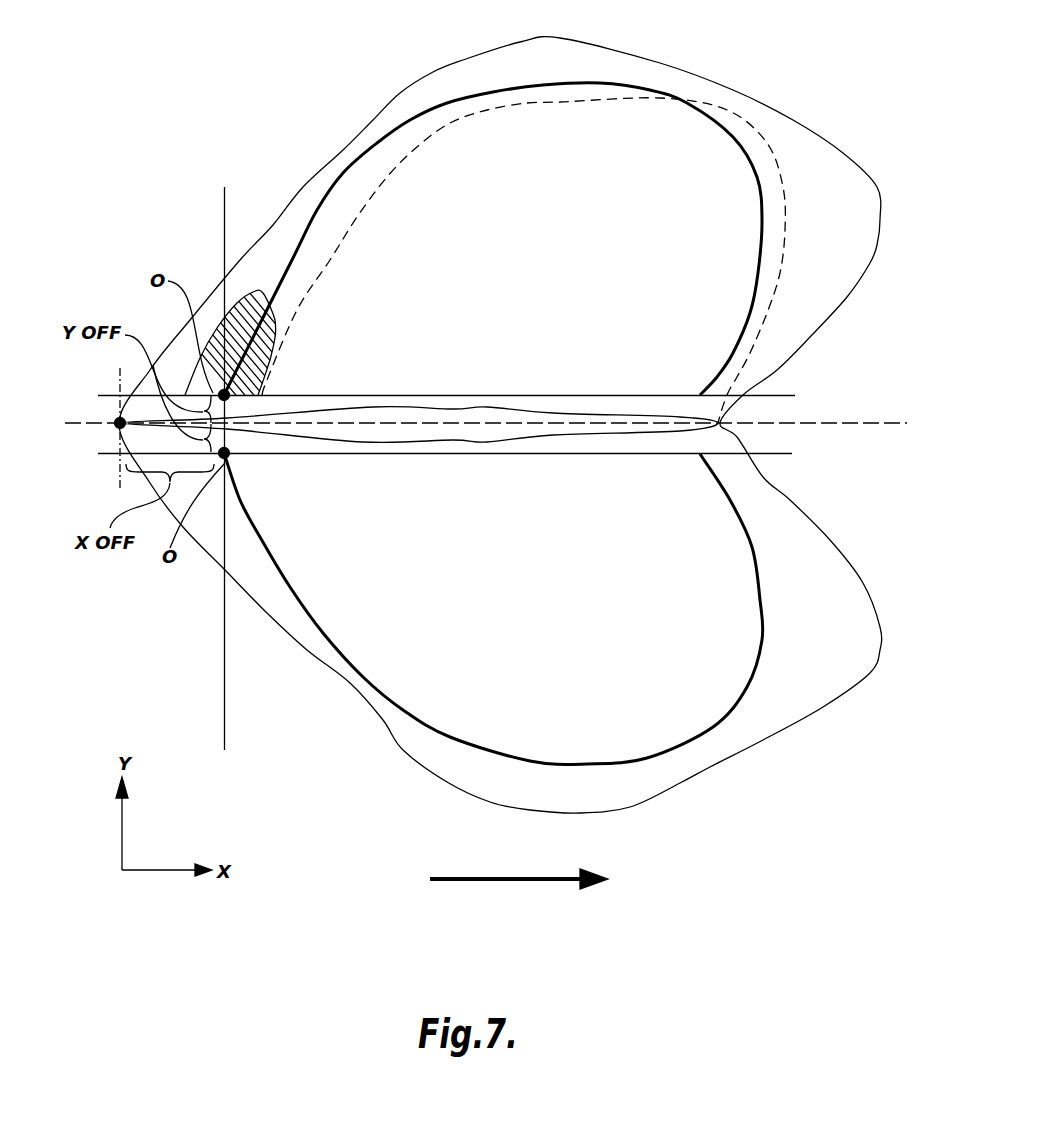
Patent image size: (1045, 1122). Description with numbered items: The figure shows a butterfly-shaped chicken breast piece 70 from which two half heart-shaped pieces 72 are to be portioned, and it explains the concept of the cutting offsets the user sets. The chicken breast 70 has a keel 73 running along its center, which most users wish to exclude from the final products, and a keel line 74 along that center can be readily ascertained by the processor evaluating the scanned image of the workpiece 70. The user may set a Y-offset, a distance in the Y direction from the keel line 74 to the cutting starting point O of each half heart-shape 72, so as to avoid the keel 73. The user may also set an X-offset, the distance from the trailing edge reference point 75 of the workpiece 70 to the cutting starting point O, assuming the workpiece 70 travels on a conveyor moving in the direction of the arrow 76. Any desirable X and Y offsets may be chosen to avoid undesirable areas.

The butterfly-shaped chicken breast piece 70 is at (790, 118).
The half heart-shaped piece 72 is at (707, 110).
The keel 73 is at (737, 410).
The keel line 74 is at (868, 423).
The reference point 75 is at (117, 421).
The arrow 76 is at (488, 877).